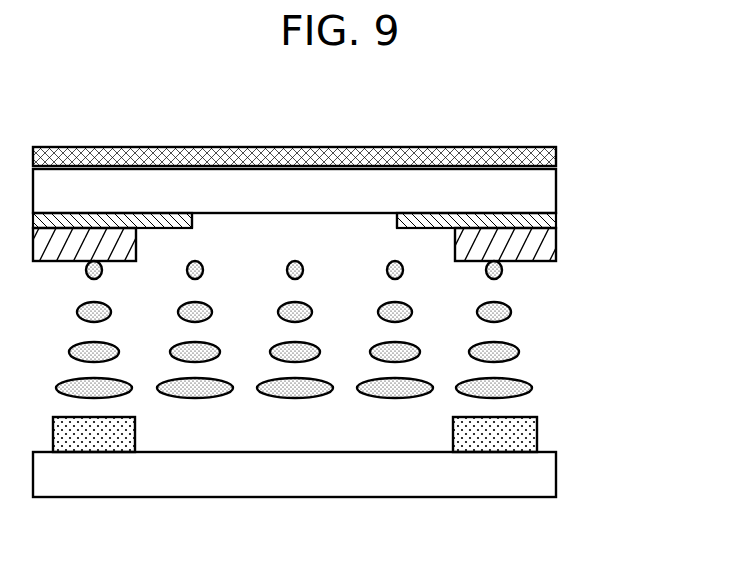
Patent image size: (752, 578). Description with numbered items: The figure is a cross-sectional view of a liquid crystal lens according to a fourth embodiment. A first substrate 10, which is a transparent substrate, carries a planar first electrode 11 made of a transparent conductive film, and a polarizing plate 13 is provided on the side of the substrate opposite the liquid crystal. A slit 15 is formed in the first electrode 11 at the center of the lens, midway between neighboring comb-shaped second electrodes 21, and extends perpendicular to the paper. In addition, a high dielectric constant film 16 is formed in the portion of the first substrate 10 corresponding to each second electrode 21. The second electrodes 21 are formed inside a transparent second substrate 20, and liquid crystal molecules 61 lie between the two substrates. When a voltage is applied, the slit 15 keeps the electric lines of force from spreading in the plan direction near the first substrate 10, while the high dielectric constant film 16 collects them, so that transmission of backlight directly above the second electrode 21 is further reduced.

The polarizing plate 13 is at (535, 152).
The first substrate 10 is at (556, 191).
The first electrode 11 is at (556, 220).
The high dielectric constant film 16 is at (556, 249).
The slit 15 is at (291, 230).
The liquid crystal molecules 61 is at (520, 343).
The second electrode 21 is at (537, 435).
The second substrate 20 is at (556, 470).